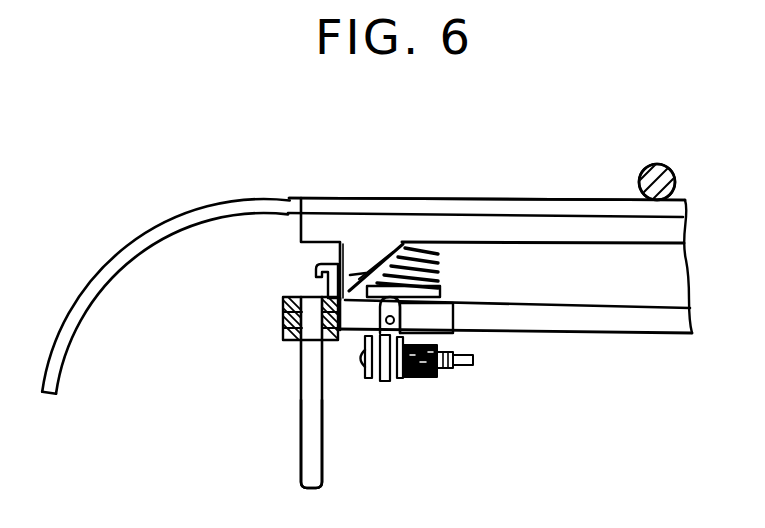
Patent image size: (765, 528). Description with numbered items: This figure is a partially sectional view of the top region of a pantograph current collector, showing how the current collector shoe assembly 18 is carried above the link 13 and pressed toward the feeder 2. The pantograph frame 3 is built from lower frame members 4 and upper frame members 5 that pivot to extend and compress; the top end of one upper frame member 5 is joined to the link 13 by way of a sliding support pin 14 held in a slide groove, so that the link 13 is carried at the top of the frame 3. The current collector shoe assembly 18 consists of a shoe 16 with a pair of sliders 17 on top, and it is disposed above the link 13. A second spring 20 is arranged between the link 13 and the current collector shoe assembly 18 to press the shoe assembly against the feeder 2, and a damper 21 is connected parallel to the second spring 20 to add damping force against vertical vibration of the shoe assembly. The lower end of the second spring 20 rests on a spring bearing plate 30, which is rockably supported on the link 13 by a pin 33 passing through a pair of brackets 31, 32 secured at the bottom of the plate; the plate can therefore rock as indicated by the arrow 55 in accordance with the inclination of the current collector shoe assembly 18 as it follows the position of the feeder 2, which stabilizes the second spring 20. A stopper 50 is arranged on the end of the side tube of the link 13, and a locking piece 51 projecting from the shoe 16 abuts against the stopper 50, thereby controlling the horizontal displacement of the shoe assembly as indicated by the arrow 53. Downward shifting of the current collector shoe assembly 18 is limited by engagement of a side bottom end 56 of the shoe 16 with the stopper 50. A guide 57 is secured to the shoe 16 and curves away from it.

The feeder 2 is at (676, 176).
The frame 3 is at (298, 448).
The lower frame members 4 is at (462, 366).
The upper frame members 5 is at (300, 381).
The link 13 is at (596, 306).
The sliding support pin 14 is at (283, 314).
The shoe 16 is at (472, 213).
The sliders 17 is at (514, 205).
The current collector shoe assembly 18 is at (592, 197).
The second spring 20 is at (433, 259).
The damper 21 is at (423, 380).
The spring bearing plate 30 is at (443, 291).
The bracket 31 is at (453, 331).
The bracket 32 is at (498, 346).
The pin 33 is at (354, 336).
The stopper 50 is at (314, 271).
The locking piece 51 is at (352, 335).
The arrow 53 is at (355, 169).
The arrow 55 is at (370, 275).
The side bottom end 56 is at (300, 251).
The guide 57 is at (143, 233).